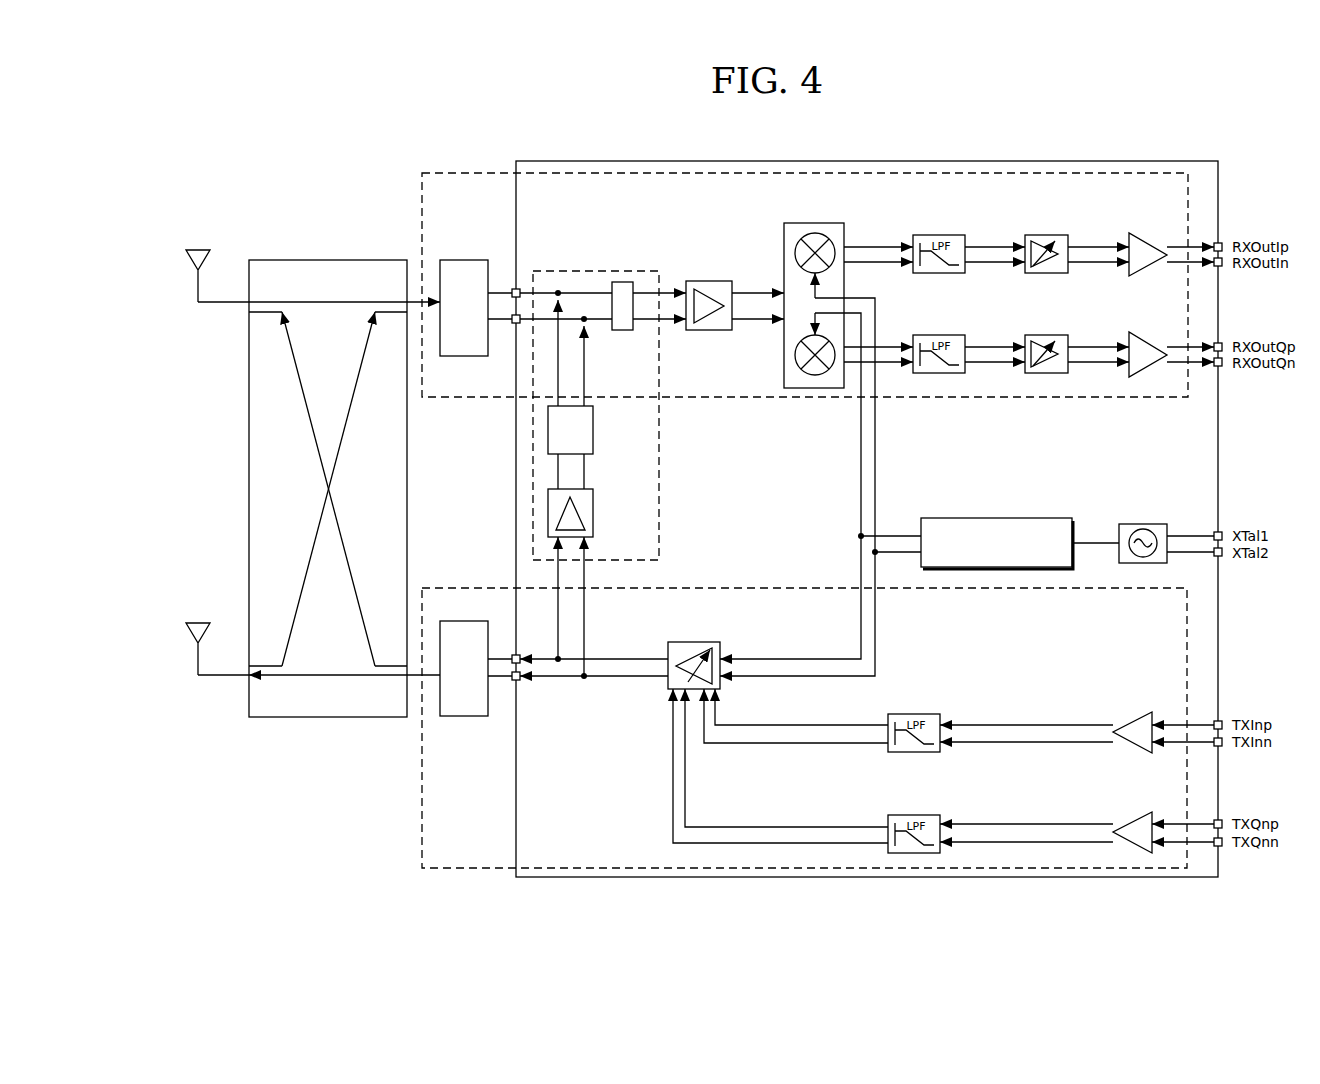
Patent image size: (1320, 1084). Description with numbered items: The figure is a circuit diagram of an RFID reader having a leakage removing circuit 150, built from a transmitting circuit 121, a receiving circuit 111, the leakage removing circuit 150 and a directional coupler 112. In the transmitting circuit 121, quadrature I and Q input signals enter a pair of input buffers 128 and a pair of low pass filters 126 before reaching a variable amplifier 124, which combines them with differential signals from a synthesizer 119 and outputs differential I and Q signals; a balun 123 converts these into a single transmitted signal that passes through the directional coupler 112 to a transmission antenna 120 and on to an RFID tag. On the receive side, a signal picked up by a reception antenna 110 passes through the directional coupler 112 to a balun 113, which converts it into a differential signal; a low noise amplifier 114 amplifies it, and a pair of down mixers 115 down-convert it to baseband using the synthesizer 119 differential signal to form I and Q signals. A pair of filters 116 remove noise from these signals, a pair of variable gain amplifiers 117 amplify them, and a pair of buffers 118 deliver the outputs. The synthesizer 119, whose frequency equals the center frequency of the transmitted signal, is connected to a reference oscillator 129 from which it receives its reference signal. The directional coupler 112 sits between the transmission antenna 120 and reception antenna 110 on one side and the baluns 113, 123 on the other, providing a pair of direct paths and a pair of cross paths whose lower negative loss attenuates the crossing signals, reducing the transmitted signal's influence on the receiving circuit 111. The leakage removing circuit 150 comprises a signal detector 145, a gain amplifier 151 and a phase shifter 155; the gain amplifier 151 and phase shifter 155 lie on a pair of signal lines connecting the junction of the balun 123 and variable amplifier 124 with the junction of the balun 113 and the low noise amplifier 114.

The reception antenna 110 is at (198, 250).
The receiving circuit 111 is at (485, 103).
The directional coupler 112 is at (343, 192).
The balun 113 is at (493, 202).
The low noise amplifier 114 is at (737, 208).
The down mixer 115 is at (850, 177).
The filter 116 is at (975, 193).
The variable gain amplifier 117 is at (1082, 192).
The buffer 118 is at (1175, 177).
The synthesizer 119 is at (1028, 458).
The transmission antenna 120 is at (198, 623).
The transmitting circuit 121 is at (486, 518).
The balun 123 is at (465, 716).
The variable amplifier 124 is at (730, 598).
The low pass filter 126 is at (938, 648).
The input buffer 128 is at (1158, 650).
The reference oscillator 129 is at (1173, 440).
The signal detector 145 is at (642, 207).
The leakage removing circuit 150 is at (571, 207).
The gain amplifier 151 is at (593, 512).
The phase shifter 155 is at (593, 428).